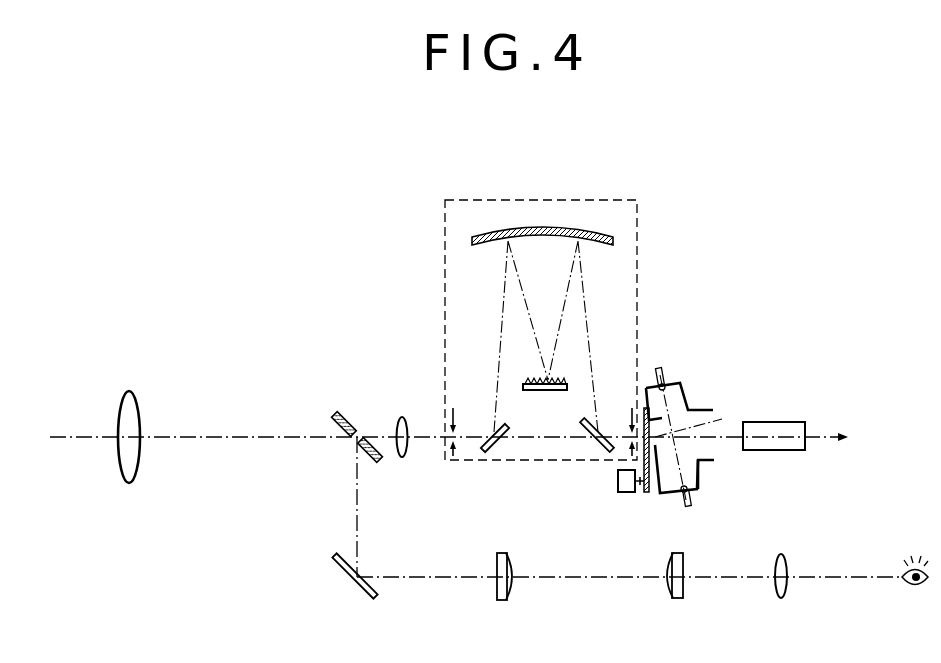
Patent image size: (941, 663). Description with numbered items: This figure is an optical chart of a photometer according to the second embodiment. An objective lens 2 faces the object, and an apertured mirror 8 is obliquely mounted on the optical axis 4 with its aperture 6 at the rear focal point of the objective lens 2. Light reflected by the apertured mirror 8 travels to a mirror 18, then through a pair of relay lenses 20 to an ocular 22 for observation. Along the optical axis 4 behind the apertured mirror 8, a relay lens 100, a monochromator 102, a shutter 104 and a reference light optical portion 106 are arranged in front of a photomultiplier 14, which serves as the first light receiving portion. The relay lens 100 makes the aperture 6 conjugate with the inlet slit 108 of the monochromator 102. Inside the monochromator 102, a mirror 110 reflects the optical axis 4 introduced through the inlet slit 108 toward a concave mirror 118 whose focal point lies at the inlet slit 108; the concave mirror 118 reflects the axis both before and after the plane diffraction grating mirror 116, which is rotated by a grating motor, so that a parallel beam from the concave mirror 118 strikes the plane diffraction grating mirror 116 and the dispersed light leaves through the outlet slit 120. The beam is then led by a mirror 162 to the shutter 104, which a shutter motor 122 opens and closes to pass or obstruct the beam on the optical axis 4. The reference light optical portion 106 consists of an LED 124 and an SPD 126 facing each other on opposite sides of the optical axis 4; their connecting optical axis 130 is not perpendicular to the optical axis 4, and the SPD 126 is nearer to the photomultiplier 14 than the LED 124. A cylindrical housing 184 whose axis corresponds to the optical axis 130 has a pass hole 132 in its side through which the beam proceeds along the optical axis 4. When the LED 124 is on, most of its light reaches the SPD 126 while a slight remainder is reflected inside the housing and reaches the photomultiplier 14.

The objective lens 2 is at (131, 413).
The optical axis 4 is at (193, 437).
The aperture 6 is at (355, 440).
The apertured mirror 8 is at (350, 412).
The photomultiplier 14 is at (795, 422).
The mirror 18 is at (343, 570).
The relay lenses 20 is at (673, 598).
The ocular 22 is at (778, 598).
The relay lens 100 is at (403, 455).
The monochromator 102 is at (657, 220).
The shutter 104 is at (645, 406).
The reference light optical portion 106 is at (702, 399).
The inlet slit 108 is at (450, 410).
The mirror 110 is at (492, 450).
The plane diffraction grating mirror 116 is at (532, 392).
The concave mirror 118 is at (545, 227).
The outlet slit 120 is at (630, 420).
The shutter motor 122 is at (627, 493).
The LED 124 is at (668, 383).
The SPD 126 is at (688, 500).
The optical axis 130 is at (720, 420).
The pass hole 132 is at (705, 445).
The mirror 162 is at (595, 448).
The cylindrical housing 184 is at (698, 472).